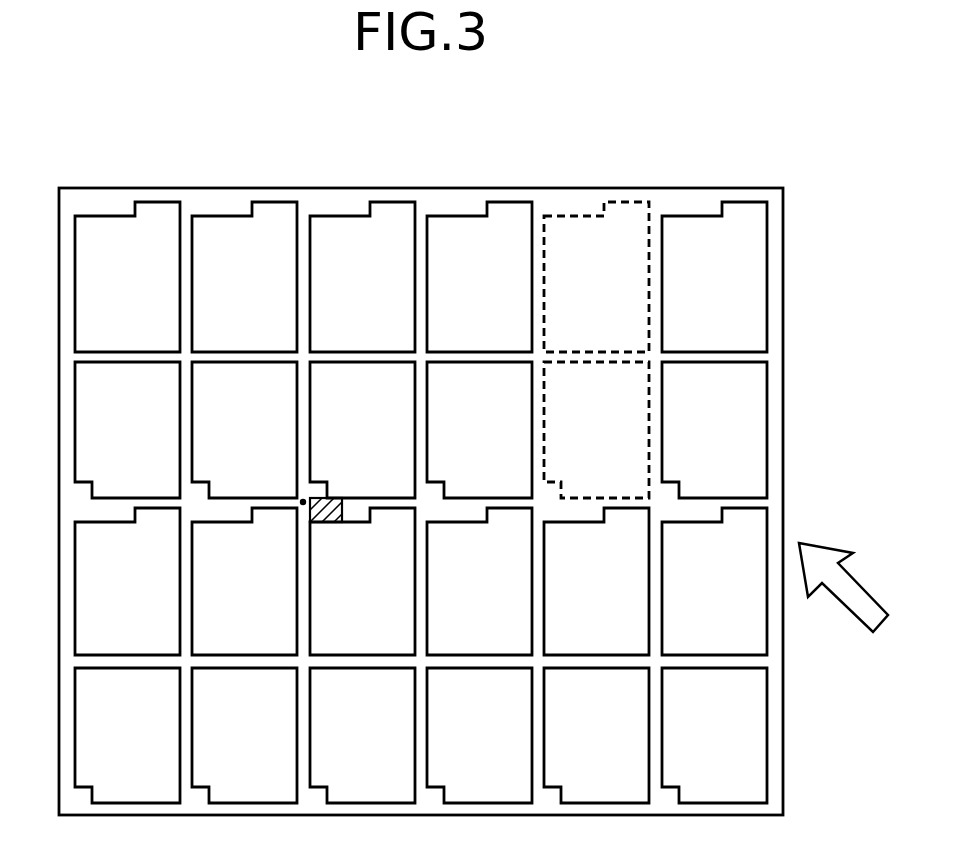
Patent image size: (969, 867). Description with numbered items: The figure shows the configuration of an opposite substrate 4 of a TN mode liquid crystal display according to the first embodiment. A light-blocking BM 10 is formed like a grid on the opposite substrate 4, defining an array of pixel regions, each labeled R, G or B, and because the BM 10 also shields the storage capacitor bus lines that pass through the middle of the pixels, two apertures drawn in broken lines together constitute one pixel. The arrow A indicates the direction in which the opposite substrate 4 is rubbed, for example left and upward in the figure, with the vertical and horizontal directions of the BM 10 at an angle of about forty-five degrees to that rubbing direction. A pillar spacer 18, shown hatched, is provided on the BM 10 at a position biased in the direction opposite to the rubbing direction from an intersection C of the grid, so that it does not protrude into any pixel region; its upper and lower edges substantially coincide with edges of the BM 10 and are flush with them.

The opposite substrate 4 is at (34, 348).
The BM 10 is at (323, 202).
The pillar spacer 18 is at (324, 524).
The intersection C is at (303, 501).
The arrow A is at (843, 587).